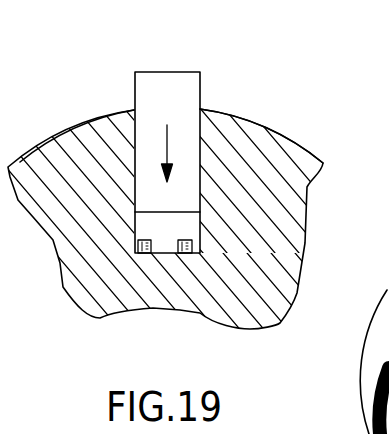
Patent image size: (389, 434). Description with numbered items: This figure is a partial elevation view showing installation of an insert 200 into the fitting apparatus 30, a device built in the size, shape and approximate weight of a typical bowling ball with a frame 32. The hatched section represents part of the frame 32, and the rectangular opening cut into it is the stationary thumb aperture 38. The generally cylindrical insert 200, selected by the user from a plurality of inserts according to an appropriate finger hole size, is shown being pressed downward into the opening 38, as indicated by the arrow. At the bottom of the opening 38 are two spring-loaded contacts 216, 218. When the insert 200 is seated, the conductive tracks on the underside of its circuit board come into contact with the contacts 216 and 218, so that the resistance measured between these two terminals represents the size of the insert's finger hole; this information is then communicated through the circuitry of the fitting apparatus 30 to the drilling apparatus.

The fitting apparatus 30 is at (78, 83).
The frame 32 is at (108, 127).
The thumb aperture 38 is at (288, 138).
The insert 200 is at (200, 82).
The spring-loaded contact 216 is at (193, 245).
The spring-loaded contact 218 is at (135, 252).